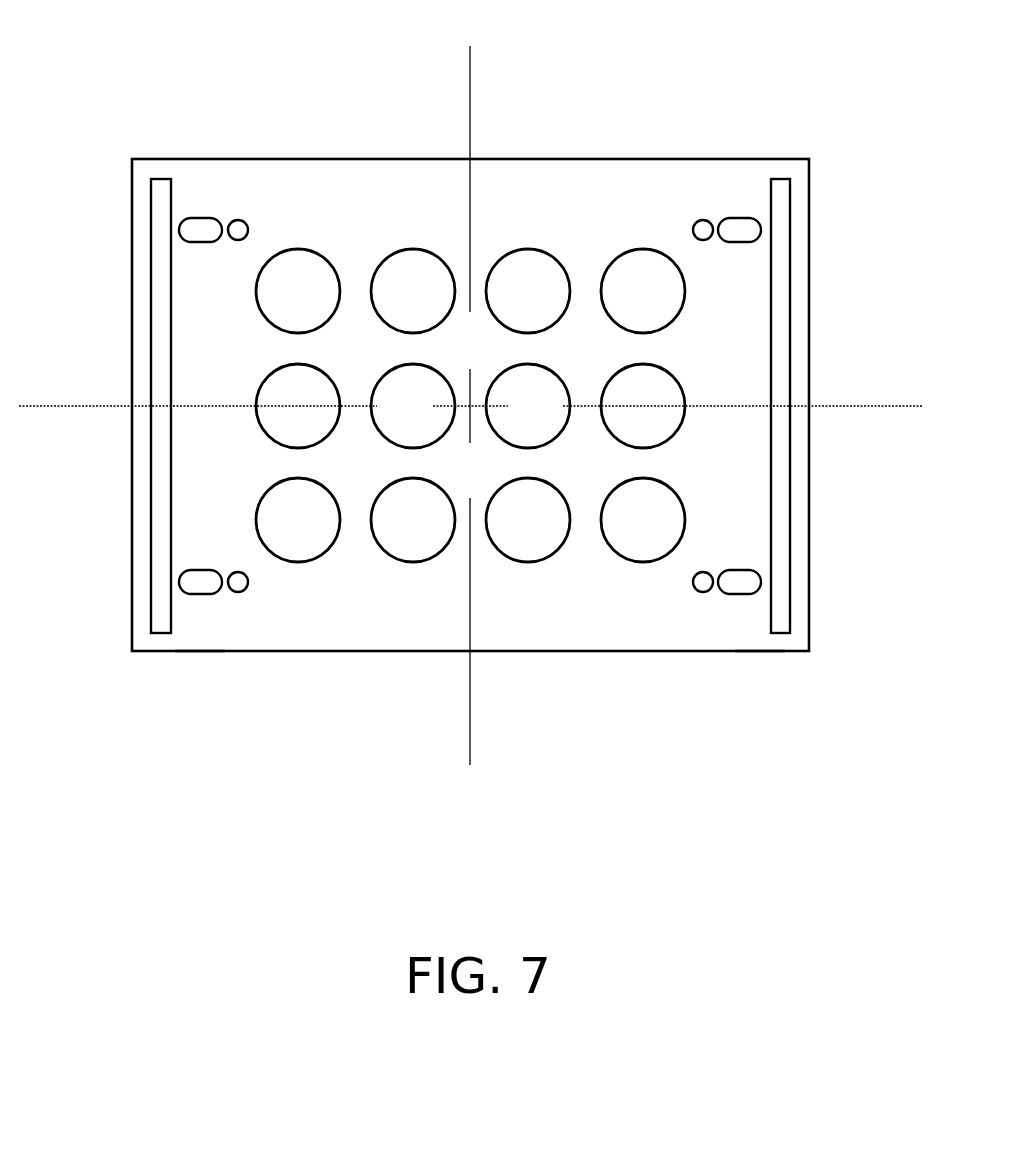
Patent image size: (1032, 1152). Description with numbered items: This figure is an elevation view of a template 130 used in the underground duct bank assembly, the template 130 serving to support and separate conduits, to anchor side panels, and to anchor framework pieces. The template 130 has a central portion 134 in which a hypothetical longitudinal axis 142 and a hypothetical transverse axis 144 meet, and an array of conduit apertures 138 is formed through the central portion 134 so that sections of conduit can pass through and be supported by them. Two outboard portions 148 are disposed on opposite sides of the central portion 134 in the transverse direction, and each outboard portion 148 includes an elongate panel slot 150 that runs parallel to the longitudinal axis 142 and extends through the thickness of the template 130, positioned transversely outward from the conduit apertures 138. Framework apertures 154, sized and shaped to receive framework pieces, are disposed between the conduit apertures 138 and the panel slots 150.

The template 130 is at (470, 375).
The central portion 134 is at (470, 327).
The conduit apertures 138 is at (470, 329).
The longitudinal axis 142 is at (519, 405).
The transverse axis 144 is at (475, 373).
The outboard portion 148 is at (482, 686).
The panel slot 150 is at (471, 406).
The framework apertures 154 is at (468, 345).